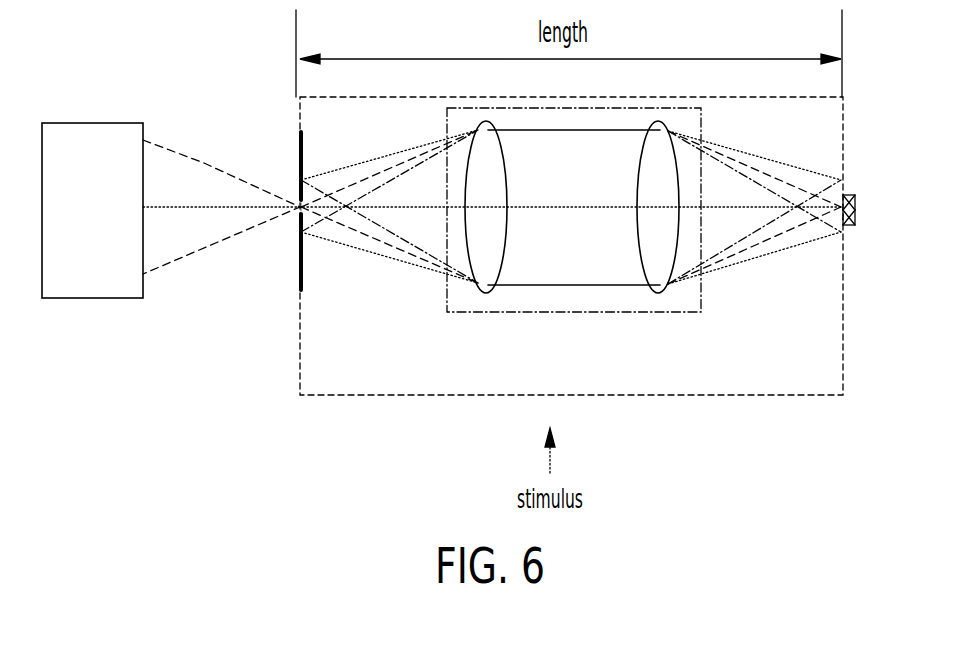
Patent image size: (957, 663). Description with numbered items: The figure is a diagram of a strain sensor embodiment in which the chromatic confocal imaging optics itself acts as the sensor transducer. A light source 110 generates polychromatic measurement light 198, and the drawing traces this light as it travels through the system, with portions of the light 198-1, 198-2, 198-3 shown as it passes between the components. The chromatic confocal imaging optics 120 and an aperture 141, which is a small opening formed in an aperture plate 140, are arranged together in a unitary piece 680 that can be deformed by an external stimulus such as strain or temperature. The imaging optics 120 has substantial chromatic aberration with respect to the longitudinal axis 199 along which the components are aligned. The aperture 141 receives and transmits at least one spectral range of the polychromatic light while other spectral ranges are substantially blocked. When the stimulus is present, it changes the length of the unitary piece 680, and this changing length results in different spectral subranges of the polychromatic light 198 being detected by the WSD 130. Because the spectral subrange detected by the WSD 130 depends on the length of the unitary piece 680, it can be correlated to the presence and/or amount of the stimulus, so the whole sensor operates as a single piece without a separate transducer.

The light source 110 is at (857, 211).
The chromatic confocal imaging optics 120 is at (570, 314).
The WSD 130 is at (80, 130).
The aperture plate 140 is at (298, 160).
The aperture 141 is at (298, 210).
The polychromatic measurement light 198 is at (810, 164).
The polychromatic measurement light 198-1 is at (400, 148).
The polychromatic measurement light 198-2 is at (204, 162).
The polychromatic measurement light 198-3 is at (392, 236).
The longitudinal axis 199 is at (144, 206).
The unitary piece 680 is at (342, 97).